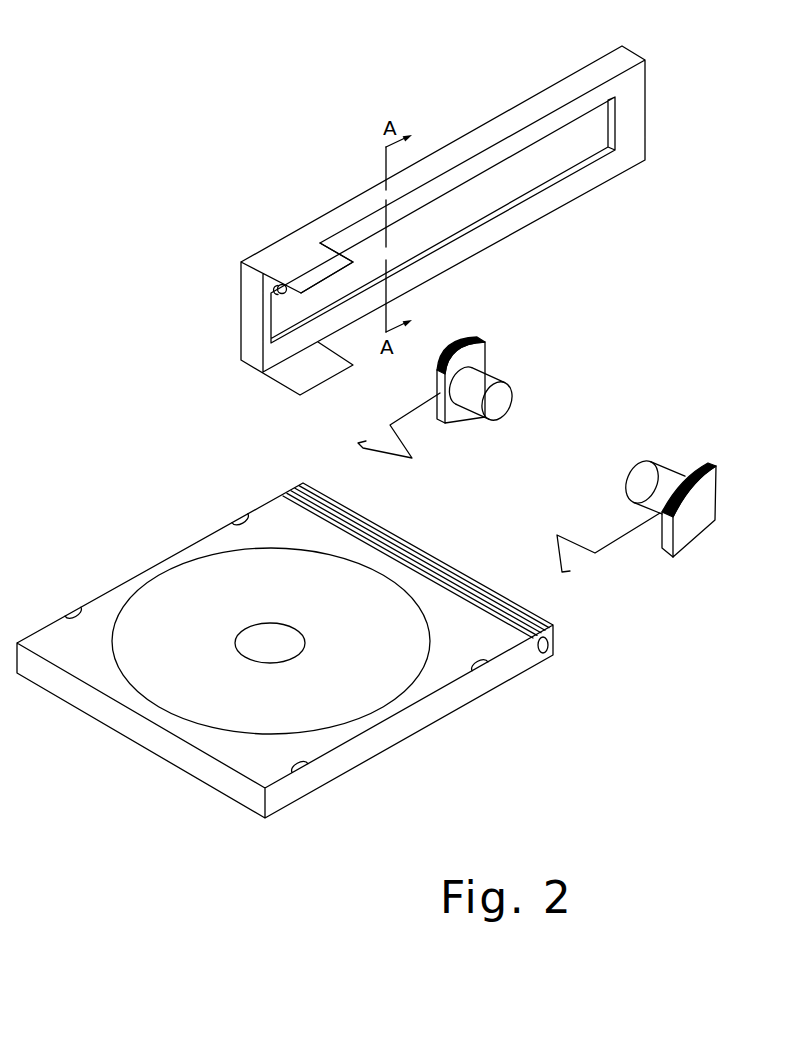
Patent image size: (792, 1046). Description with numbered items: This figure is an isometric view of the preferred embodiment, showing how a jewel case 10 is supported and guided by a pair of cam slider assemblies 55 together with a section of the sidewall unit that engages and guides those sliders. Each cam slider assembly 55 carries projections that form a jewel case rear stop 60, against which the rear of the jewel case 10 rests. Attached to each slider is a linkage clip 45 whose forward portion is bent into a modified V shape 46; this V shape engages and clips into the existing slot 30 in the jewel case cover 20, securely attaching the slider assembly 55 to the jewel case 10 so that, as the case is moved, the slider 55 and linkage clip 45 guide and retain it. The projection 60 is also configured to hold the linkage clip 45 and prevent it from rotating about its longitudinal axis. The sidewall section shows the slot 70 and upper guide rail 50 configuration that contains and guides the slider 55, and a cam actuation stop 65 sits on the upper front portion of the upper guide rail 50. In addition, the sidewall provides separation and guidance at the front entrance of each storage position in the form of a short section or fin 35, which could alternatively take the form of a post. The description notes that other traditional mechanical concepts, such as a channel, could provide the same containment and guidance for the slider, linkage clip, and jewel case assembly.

The jewel case 10 is at (316, 655).
The jewel case cover 20 is at (468, 691).
The slot 30 is at (239, 519).
The separation and guidance fin 35 is at (321, 276).
The linkage clip 45 is at (637, 633).
The modified V shape 46 is at (412, 458).
The upper guide rail 50 is at (531, 195).
The cam slider assembly 55 is at (733, 591).
The jewel case rear stop 60 is at (515, 383).
The cam actuation stop 65 is at (276, 292).
The slot 70 is at (437, 218).